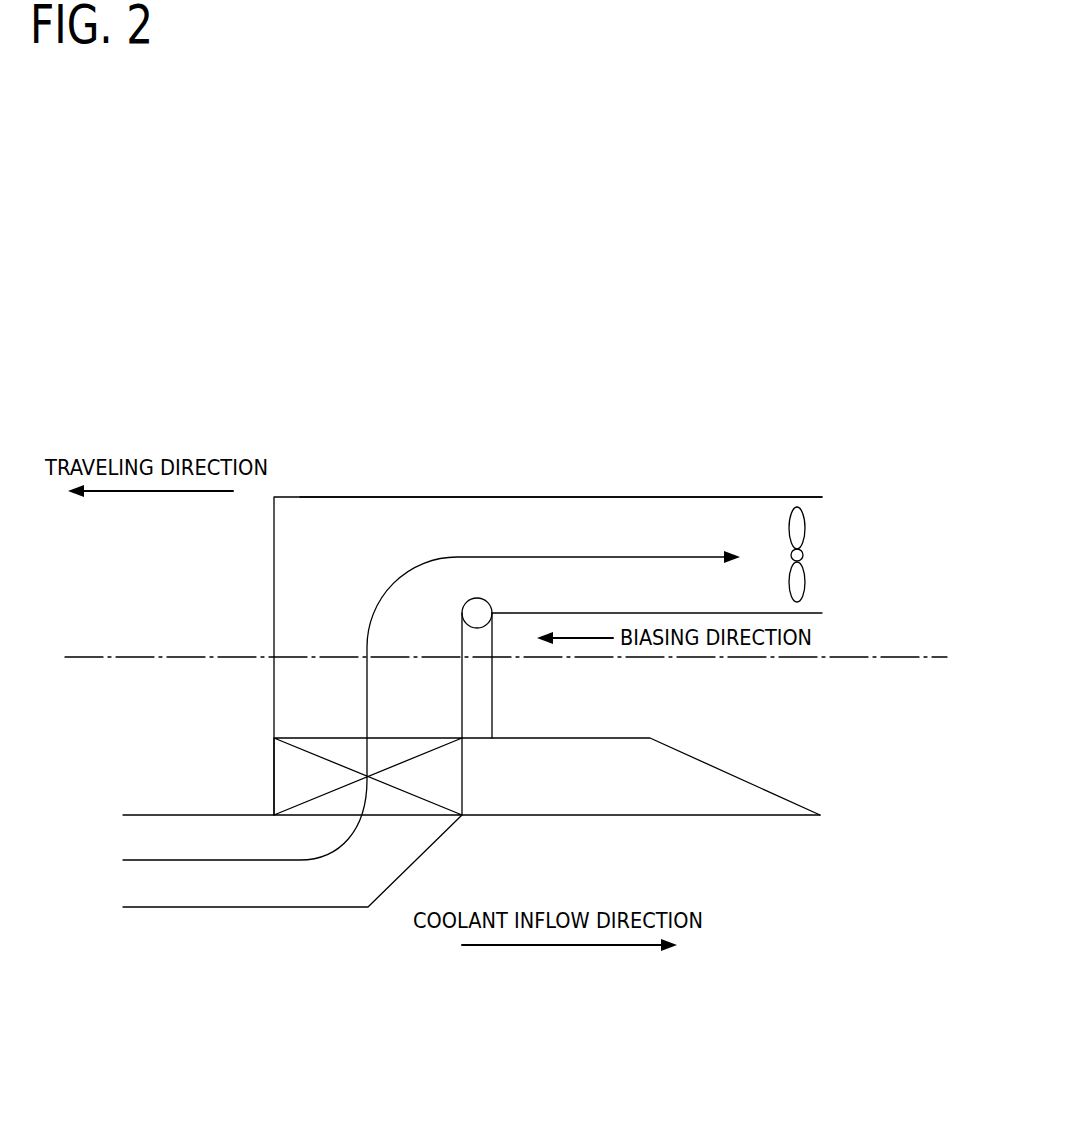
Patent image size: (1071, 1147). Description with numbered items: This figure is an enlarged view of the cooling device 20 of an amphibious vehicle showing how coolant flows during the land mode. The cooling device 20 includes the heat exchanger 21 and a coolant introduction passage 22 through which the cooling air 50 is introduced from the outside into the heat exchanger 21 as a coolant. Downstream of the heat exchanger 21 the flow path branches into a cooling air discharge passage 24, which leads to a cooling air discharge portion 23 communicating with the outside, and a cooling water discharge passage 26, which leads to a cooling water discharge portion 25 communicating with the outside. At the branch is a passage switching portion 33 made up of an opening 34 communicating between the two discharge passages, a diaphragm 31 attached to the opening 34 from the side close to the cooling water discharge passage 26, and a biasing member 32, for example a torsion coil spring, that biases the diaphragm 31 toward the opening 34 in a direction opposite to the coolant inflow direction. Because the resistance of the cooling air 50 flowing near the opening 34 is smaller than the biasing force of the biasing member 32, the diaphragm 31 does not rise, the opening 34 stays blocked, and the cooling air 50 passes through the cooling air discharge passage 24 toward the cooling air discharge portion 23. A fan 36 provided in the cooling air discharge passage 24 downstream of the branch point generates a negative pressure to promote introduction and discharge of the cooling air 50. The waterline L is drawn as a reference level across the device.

The cooling device 20 is at (302, 455).
The heat exchanger 21 is at (274, 778).
The coolant introduction passage 22 is at (206, 907).
The cooling air discharge portion 23 is at (857, 549).
The cooling air discharge passage 24 is at (670, 497).
The cooling water discharge portion 25 is at (836, 692).
The cooling water discharge passage 26 is at (693, 757).
The diaphragm 31 is at (492, 643).
The biasing member 32 is at (477, 597).
The passage switching portion 33 is at (557, 412).
The opening 34 is at (445, 676).
The fan 36 is at (805, 523).
The cooling air 50 is at (302, 860).
The waterline L is at (896, 657).